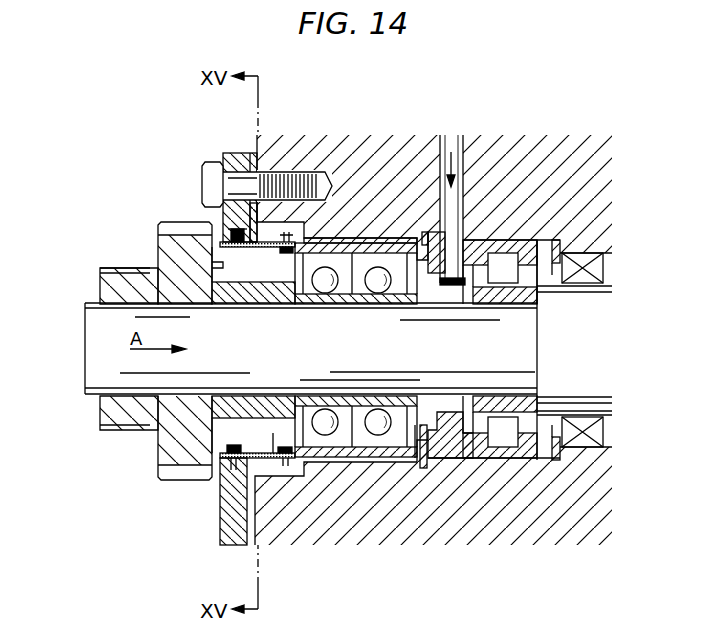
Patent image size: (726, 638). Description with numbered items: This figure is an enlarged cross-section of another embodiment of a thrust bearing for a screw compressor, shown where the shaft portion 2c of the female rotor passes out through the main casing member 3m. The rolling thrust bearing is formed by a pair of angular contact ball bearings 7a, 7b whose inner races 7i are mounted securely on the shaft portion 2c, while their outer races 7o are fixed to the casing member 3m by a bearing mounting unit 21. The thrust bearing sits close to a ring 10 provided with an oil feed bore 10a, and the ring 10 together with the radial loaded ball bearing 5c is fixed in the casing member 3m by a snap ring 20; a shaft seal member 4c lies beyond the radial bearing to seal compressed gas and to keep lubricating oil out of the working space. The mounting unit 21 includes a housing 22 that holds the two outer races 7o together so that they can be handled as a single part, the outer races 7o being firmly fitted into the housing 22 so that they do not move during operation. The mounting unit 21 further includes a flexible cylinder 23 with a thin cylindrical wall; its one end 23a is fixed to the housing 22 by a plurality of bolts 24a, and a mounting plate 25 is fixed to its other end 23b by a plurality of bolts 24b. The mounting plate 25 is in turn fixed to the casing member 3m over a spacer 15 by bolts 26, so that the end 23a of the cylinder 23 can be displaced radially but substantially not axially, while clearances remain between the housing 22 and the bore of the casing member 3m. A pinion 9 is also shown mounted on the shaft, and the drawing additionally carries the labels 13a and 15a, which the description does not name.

The shaft portion 2c is at (86, 373).
The main casing member 3m is at (488, 515).
The shaft seal member 4c is at (583, 281).
The radial loaded ball bearing 5c is at (510, 458).
The angular contact ball bearing 7a is at (332, 304).
The angular contact ball bearing 7b is at (394, 304).
The inner race 7i is at (352, 398).
The outer race 7o is at (378, 252).
The pinion 9 is at (127, 280).
The ring 10 is at (467, 238).
The oil feed bore 10a is at (446, 288).
The retaining piece 13a is at (440, 286).
The spacer 15 is at (268, 152).
The bush flange 15a is at (305, 238).
The snap ring 20 is at (424, 468).
The bearing mounting unit 21 is at (239, 303).
The housing 22 is at (349, 238).
The flexible cylinder 23 is at (278, 238).
The end of cylinder 23a is at (283, 250).
The other end of cylinder 23b is at (217, 266).
The bolts 24a is at (293, 479).
The bolts 24b is at (232, 447).
The mounting plate 25 is at (238, 153).
The bolts 26 is at (202, 186).